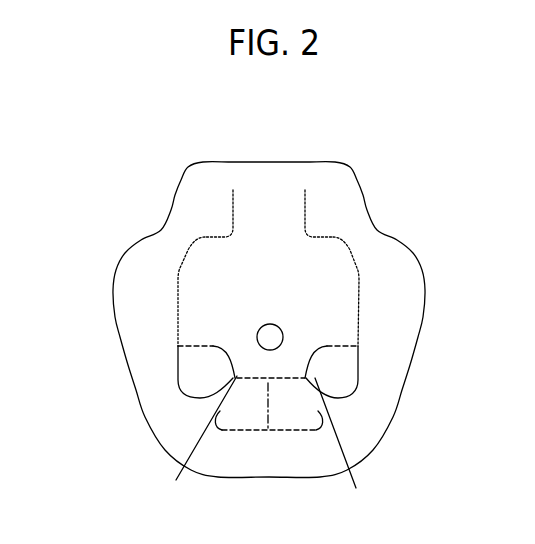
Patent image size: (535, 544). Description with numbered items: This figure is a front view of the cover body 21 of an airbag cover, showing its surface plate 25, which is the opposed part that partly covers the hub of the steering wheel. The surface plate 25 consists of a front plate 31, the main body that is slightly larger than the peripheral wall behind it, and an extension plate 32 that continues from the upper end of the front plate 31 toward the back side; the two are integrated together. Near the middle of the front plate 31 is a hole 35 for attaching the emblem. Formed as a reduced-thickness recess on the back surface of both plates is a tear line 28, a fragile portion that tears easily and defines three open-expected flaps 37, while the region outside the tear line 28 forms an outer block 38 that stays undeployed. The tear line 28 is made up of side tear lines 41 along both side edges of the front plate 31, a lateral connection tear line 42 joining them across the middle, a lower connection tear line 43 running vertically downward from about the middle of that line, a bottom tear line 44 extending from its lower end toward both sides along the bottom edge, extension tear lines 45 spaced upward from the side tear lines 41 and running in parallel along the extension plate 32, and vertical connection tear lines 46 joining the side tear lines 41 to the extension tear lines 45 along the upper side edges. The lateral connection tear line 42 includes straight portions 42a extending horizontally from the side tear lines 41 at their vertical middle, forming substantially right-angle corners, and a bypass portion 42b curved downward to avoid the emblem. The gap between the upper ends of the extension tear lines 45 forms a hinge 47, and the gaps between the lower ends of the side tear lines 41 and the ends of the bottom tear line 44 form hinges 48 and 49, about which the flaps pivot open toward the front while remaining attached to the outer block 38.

The cover body 21 is at (286, 150).
The surface plate 25 is at (408, 268).
The tear line 28 is at (178, 282).
The front plate 31 is at (397, 350).
The extension plate 32 is at (343, 195).
The hole 35 is at (268, 323).
The open-expected flaps 37 is at (202, 262).
The outer block 38 is at (132, 297).
The side tear lines 41 is at (178, 367).
The lateral connection tear line 42 is at (176, 480).
The straight portions 42a is at (180, 340).
The bypass portion 42b is at (356, 488).
The lower connection tear line 43 is at (265, 432).
The bottom tear line 44 is at (293, 432).
The extension tear lines 45 is at (232, 204).
The vertical connection tear lines 46 is at (203, 237).
The hinge 47 is at (263, 203).
The hinge 48 is at (193, 403).
The hinge 49 is at (345, 403).